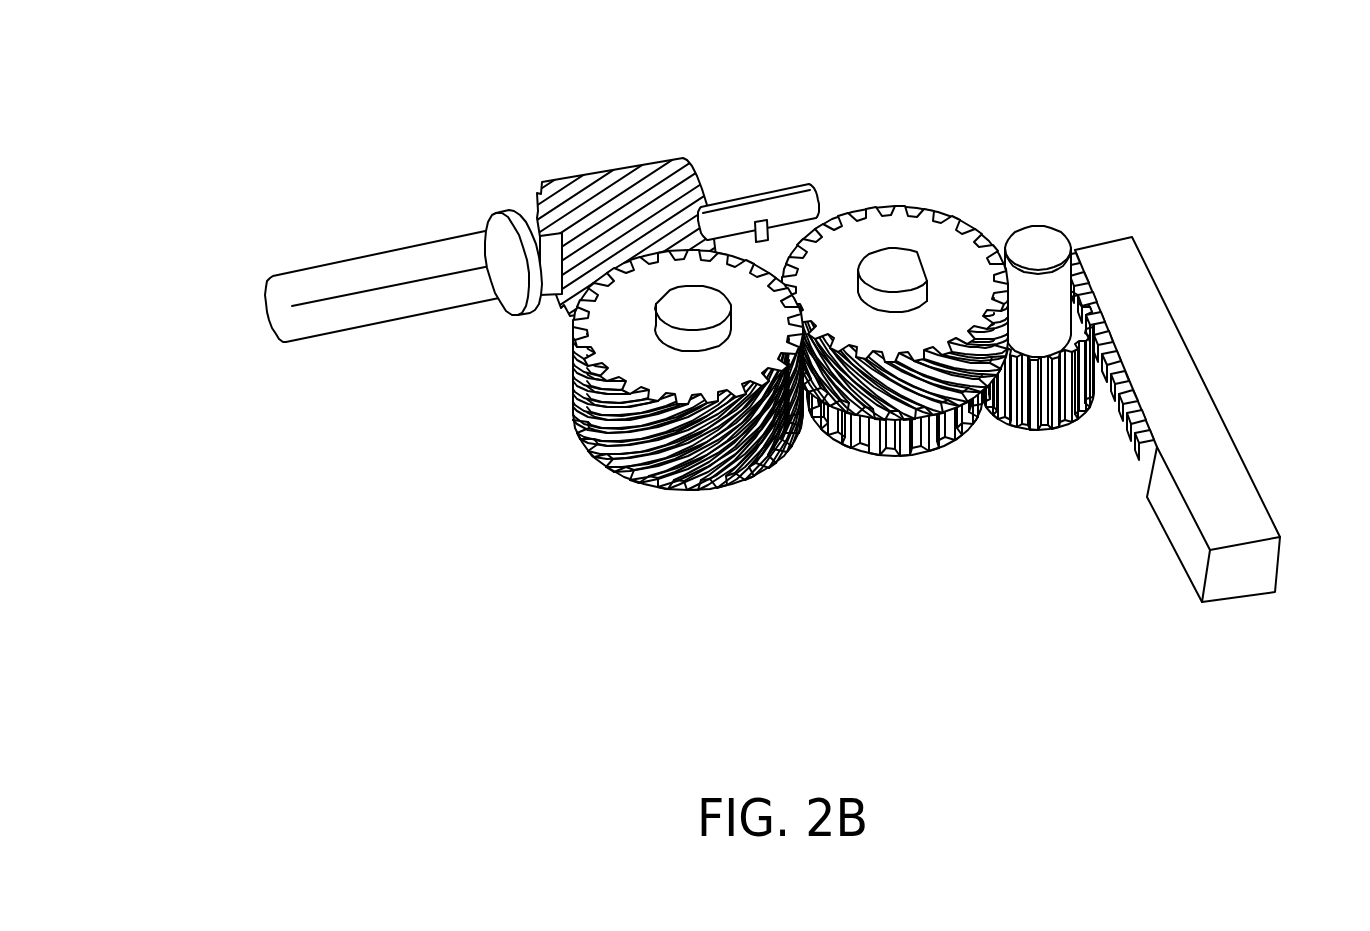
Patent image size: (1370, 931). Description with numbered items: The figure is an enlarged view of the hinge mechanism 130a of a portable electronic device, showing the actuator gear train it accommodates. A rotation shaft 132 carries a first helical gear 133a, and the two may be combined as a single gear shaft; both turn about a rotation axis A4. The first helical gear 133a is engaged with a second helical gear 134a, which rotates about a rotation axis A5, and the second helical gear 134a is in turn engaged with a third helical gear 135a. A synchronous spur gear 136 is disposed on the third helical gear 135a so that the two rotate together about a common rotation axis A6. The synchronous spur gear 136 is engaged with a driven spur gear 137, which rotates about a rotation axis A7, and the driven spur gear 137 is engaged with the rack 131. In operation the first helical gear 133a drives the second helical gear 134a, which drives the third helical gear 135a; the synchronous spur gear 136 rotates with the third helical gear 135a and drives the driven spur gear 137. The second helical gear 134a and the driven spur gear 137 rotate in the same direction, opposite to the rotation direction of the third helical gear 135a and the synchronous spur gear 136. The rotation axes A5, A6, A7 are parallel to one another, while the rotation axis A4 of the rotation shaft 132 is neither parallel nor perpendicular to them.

The hinge mechanism 130a is at (723, 319).
The rack 131 is at (1192, 383).
The rotation shaft 132 is at (358, 270).
The first helical gear 133a is at (605, 172).
The second helical gear 134a is at (667, 440).
The third helical gear 135a is at (850, 400).
The synchronous spur gear 136 is at (922, 455).
The driven spur gear 137 is at (1038, 402).
The rotation axis A4 is at (272, 311).
The rotation axis A5 is at (697, 300).
The rotation axis A6 is at (897, 270).
The rotation axis A7 is at (1038, 245).